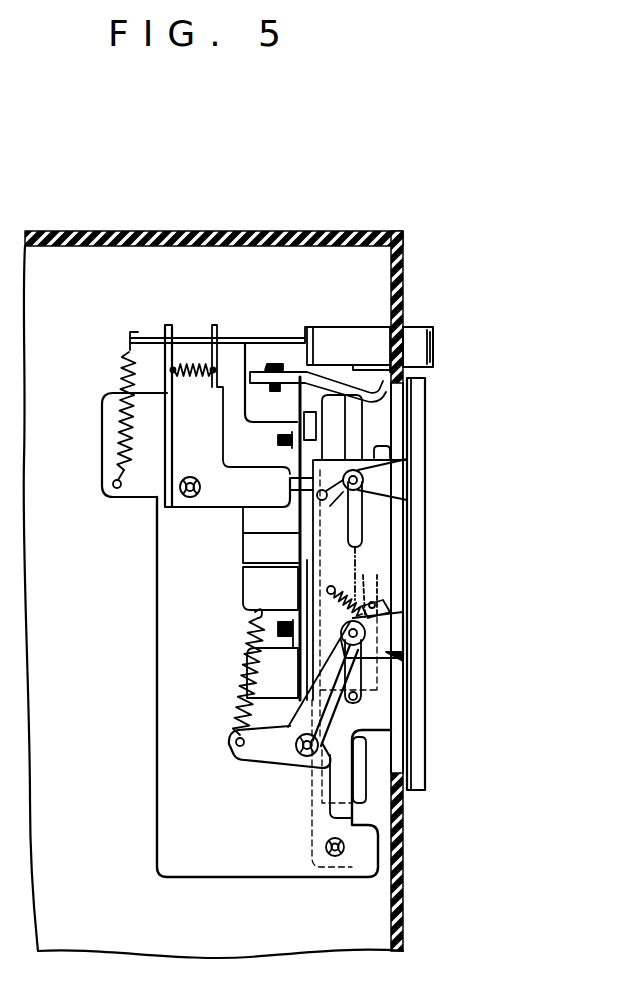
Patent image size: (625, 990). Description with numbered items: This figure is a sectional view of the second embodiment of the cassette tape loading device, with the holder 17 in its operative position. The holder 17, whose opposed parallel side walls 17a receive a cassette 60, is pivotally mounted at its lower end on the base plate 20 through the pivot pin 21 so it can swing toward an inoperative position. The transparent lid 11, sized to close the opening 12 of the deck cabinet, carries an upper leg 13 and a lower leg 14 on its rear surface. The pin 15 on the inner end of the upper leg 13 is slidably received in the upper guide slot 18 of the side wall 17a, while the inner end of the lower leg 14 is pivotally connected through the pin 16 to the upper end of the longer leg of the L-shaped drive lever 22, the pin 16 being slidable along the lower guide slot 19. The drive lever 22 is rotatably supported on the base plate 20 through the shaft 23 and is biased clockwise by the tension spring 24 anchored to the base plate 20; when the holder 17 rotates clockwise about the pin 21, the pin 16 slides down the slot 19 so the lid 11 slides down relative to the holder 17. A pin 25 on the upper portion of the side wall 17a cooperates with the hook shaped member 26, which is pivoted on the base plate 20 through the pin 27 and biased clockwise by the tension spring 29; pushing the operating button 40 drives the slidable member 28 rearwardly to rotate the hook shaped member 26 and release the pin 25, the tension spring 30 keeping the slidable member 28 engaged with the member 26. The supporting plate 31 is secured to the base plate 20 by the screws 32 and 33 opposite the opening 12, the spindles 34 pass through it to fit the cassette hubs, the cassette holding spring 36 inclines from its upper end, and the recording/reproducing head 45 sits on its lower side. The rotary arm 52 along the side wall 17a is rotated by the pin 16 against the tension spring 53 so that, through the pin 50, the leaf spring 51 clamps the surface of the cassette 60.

The lid 11 is at (422, 549).
The opening 12 is at (410, 418).
The upper leg 13 is at (406, 482).
The lower leg 14 is at (406, 650).
The pin 15 is at (364, 492).
The pin 16 is at (360, 650).
The holder 17 is at (402, 584).
The side wall 17a is at (391, 600).
The upper guide slot 18 is at (352, 538).
The lower guide slot 19 is at (352, 692).
The base plate 20 is at (237, 877).
The pivot pin 21 is at (326, 848).
The drive lever 22 is at (264, 752).
The shaft 23 is at (301, 758).
The tension spring 24 is at (243, 676).
The pin 25 is at (322, 500).
The hook shaped member 26 is at (233, 508).
The pin 27 is at (190, 498).
The slidable member 28 is at (268, 338).
The tension spring 29 is at (190, 378).
The tension spring 30 is at (112, 430).
The supporting plate 31 is at (300, 590).
The screw 32 is at (276, 440).
The screw 33 is at (292, 640).
The spindles 34 is at (298, 538).
The cassette holding spring 36 is at (347, 371).
The operating button 40 is at (420, 332).
The recording/reproducing head 45 is at (366, 797).
The pin 50 is at (392, 612).
The leaf spring 51 is at (377, 588).
The rotary arm 52 is at (404, 660).
The tension spring 53 is at (342, 588).
The cassette 60 is at (327, 403).